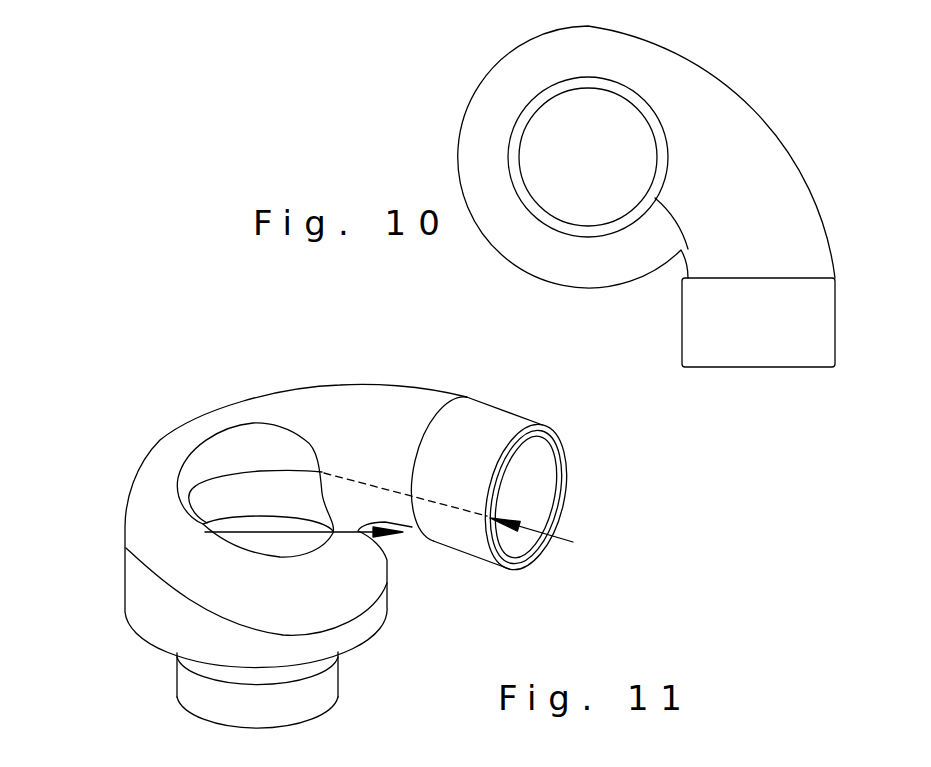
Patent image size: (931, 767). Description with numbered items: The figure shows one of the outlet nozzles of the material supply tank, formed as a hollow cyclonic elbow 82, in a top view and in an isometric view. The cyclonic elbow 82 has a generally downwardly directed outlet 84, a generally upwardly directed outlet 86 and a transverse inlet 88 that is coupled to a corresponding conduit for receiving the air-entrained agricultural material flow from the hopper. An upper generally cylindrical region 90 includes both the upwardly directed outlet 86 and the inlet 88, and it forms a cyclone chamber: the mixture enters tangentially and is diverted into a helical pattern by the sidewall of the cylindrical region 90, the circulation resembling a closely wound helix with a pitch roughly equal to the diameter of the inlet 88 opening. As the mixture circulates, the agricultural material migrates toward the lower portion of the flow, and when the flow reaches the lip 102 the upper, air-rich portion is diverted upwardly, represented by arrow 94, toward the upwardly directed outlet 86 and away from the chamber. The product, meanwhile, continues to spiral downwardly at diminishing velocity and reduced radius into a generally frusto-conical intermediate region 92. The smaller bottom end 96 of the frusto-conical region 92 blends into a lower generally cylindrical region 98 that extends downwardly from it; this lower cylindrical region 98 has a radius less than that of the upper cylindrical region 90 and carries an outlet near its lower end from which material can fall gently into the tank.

In FIG. 10, the cyclonic elbow 82 is at (624, 214).
In FIG. 11, the cyclonic elbow 82 is at (339, 571).
In FIG. 11, the downwardly directed outlet 84 is at (256, 708).
In FIG. 10, the upwardly directed outlet 86 is at (605, 170).
In FIG. 11, the upwardly directed outlet 86 is at (243, 488).
In FIG. 10, the transverse inlet 88 is at (783, 367).
In FIG. 11, the transverse inlet 88 is at (538, 490).
In FIG. 10, the upper cylindrical region 90 is at (470, 100).
In FIG. 11, the upper cylindrical region 90 is at (126, 560).
In FIG. 11, the frusto-conical intermediate region 92 is at (210, 670).
In FIG. 11, the air flow arrow 94 is at (372, 527).
In FIG. 11, the smaller bottom end 96 is at (305, 683).
In FIG. 11, the lower cylindrical region 98 is at (227, 713).
In FIG. 11, the lip 102 is at (292, 556).